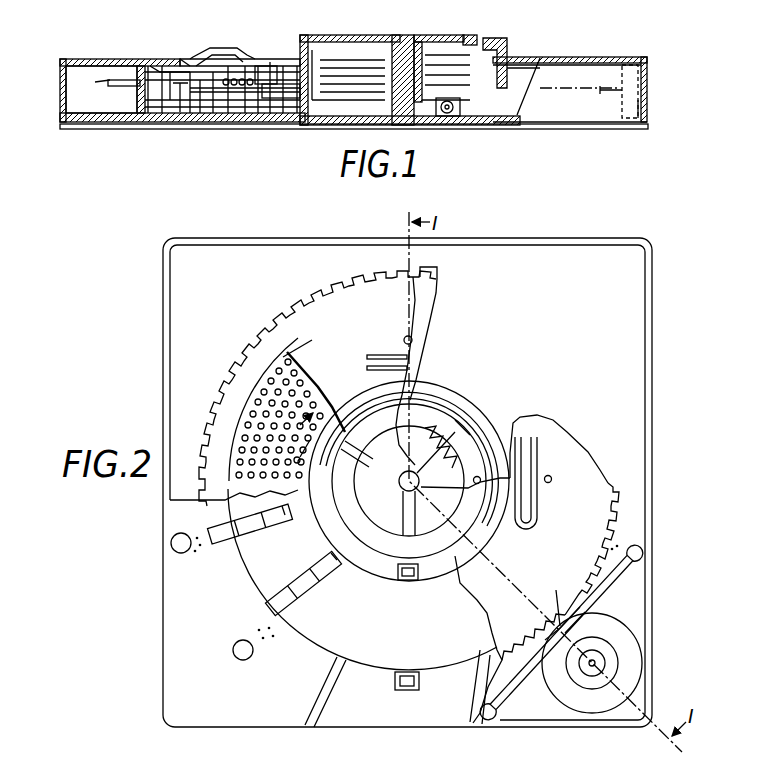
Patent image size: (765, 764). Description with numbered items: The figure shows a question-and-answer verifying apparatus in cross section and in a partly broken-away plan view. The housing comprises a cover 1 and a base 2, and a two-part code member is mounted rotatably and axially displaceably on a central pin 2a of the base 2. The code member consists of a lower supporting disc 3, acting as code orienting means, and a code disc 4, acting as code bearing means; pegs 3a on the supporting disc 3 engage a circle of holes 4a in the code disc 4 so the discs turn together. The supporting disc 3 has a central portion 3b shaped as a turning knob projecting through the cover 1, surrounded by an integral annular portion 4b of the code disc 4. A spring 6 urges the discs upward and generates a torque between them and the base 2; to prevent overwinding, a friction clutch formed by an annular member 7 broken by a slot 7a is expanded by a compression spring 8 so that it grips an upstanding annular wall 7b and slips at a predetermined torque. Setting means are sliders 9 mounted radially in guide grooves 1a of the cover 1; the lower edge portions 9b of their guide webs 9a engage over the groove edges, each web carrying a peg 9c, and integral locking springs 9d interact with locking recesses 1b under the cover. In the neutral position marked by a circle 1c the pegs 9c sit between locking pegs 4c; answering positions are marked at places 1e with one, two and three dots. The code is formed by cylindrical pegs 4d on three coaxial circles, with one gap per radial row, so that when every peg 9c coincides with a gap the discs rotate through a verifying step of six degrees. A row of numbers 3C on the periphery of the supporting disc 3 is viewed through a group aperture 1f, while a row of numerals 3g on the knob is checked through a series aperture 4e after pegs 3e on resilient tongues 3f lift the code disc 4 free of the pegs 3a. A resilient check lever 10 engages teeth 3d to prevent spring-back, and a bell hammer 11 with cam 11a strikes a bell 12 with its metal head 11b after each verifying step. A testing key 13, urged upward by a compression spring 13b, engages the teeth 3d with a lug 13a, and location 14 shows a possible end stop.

In FIG. 1, the cover 1 is at (63, 59).
In FIG. 2, the cover 1 is at (165, 517).
In FIG. 1, the guide grooves 1a is at (259, 64).
In FIG. 1, the locking recesses 1b is at (190, 60).
In FIG. 2, the circle 1c is at (243, 577).
In FIG. 2, the answering position marks 1e is at (270, 642).
In FIG. 2, the group aperture 1f is at (395, 688).
In FIG. 1, the base 2 is at (100, 123).
In FIG. 2, the base 2 is at (630, 252).
In FIG. 1, the central pin 2a is at (400, 35).
In FIG. 1, the supporting disc 3 is at (190, 122).
In FIG. 2, the supporting disc 3 is at (438, 312).
In FIG. 1, the pegs 3a is at (272, 60).
In FIG. 2, the pegs 3a is at (413, 340).
In FIG. 1, the central portion (turning knob) 3b is at (425, 38).
In FIG. 2, the central portion (turning knob) 3b is at (409, 481).
In FIG. 2, the row of numbers 3C is at (334, 285).
In FIG. 2, the teeth 3d is at (437, 270).
In FIG. 1, the pegs 3e is at (283, 100).
In FIG. 2, the resilient tongues 3f is at (536, 521).
In FIG. 2, the row of numerals 3g is at (405, 386).
In FIG. 1, the code disc 4 is at (279, 66).
In FIG. 2, the code disc 4 is at (288, 355).
In FIG. 1, the circle of holes 4a is at (255, 100).
In FIG. 2, the circle of holes 4a is at (305, 401).
In FIG. 1, the annular portion 4b is at (488, 44).
In FIG. 2, the annular portion 4b is at (327, 528).
In FIG. 2, the locking pegs 4c is at (297, 400).
In FIG. 2, the code pegs 4d is at (257, 436).
In FIG. 2, the series aperture 4e is at (397, 584).
In FIG. 1, the spring 6 is at (488, 70).
In FIG. 2, the spring 6 is at (296, 448).
In FIG. 1, the annular member 7 is at (316, 112).
In FIG. 2, the annular member 7 is at (443, 397).
In FIG. 2, the slot 7a is at (465, 418).
In FIG. 2, the annular wall 7b is at (463, 420).
In FIG. 1, the compression spring 8 is at (452, 116).
In FIG. 2, the compression spring 8 is at (468, 468).
In FIG. 1, the sliders 9 is at (216, 50).
In FIG. 2, the sliders 9 is at (311, 594).
In FIG. 1, the guide webs 9a is at (236, 49).
In FIG. 1, the lower edge portions 9b is at (170, 121).
In FIG. 1, the pegs 9c is at (212, 121).
In FIG. 1, the locking springs 9d is at (152, 62).
In FIG. 2, the check lever 10 is at (606, 602).
In FIG. 1, the bell hammer 11 is at (141, 92).
In FIG. 2, the bell hammer 11 is at (539, 680).
In FIG. 2, the cam 11a is at (545, 628).
In FIG. 2, the metal head 11b is at (560, 628).
In FIG. 1, the bell 12 is at (91, 90).
In FIG. 2, the bell 12 is at (633, 657).
In FIG. 1, the testing key 13 is at (630, 57).
In FIG. 1, the lug 13a is at (618, 95).
In FIG. 1, the compression spring 13b is at (646, 122).
In FIG. 2, the end stop location 14 is at (624, 548).